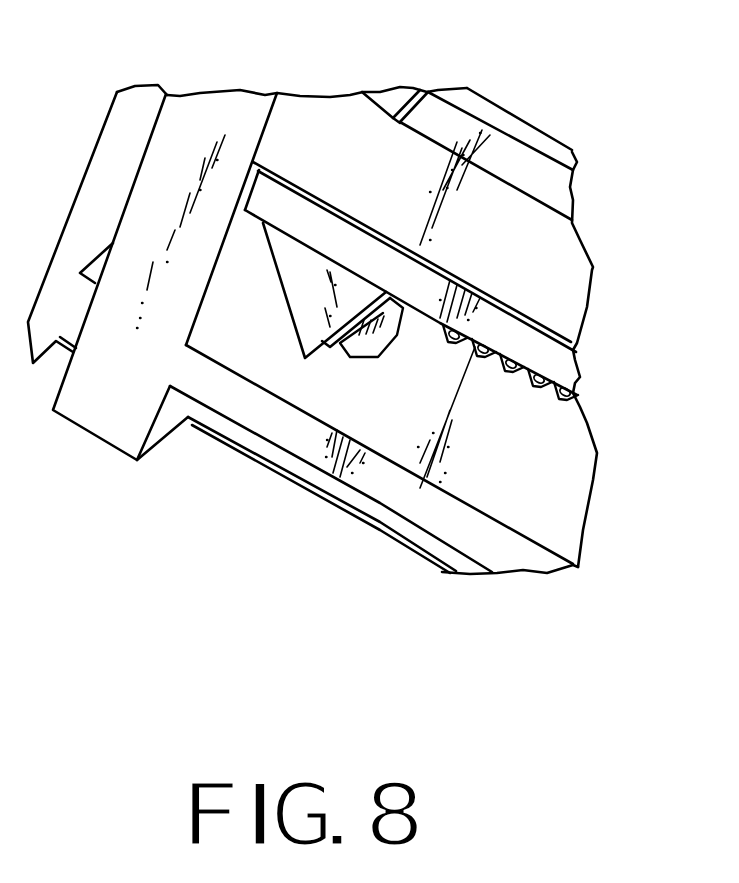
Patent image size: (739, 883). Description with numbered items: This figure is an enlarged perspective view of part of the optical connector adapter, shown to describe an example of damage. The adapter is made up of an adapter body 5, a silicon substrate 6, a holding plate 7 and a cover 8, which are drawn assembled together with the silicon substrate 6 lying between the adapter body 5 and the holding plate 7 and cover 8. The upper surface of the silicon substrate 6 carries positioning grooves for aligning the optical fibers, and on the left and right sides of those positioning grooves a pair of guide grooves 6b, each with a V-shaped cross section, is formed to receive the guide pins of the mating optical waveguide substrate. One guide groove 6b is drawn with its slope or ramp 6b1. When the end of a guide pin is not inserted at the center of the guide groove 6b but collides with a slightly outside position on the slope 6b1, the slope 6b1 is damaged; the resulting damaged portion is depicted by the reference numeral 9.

The adapter body 5 is at (108, 397).
The silicon substrate 6 is at (487, 460).
The guide groove 6b is at (302, 290).
The slope 6b1 is at (323, 358).
The holding plate 7 is at (540, 355).
The cover 8 is at (533, 263).
The damaged portion 9 is at (367, 360).